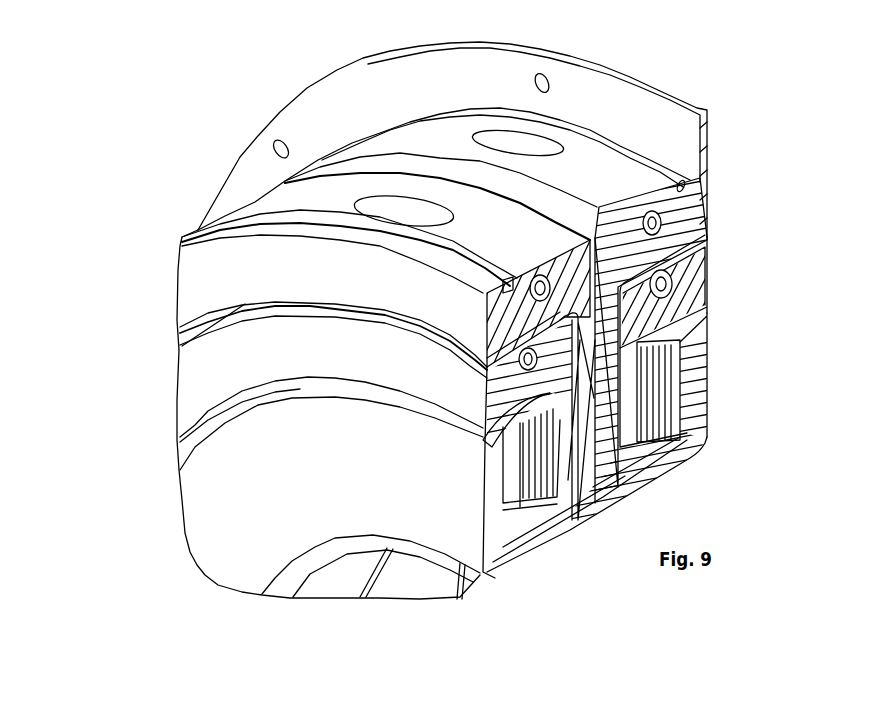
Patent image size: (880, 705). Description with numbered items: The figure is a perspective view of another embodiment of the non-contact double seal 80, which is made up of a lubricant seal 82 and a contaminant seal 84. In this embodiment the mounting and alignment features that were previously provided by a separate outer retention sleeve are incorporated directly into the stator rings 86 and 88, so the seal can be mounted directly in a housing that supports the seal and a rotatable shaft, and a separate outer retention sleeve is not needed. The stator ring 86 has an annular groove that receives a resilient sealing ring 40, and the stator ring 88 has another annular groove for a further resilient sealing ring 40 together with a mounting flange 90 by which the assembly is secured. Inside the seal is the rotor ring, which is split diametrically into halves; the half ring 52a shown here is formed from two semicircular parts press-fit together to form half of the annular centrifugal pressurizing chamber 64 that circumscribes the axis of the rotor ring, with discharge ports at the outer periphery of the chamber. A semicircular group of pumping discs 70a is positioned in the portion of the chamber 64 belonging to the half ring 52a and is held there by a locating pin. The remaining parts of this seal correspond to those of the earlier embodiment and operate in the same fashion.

The non-contact double seal 80 is at (152, 120).
The lubricant seal 82 is at (150, 416).
The contaminant seal 84 is at (722, 262).
The stator ring 86 is at (262, 262).
The stator ring 88 is at (577, 168).
The mounting flange 90 is at (707, 142).
The resilient sealing ring 40 is at (436, 247).
The half ring 52a is at (190, 378).
The annular centrifugal pressurizing chamber 64 is at (512, 487).
The semicircular group of pumping discs 70a is at (538, 507).